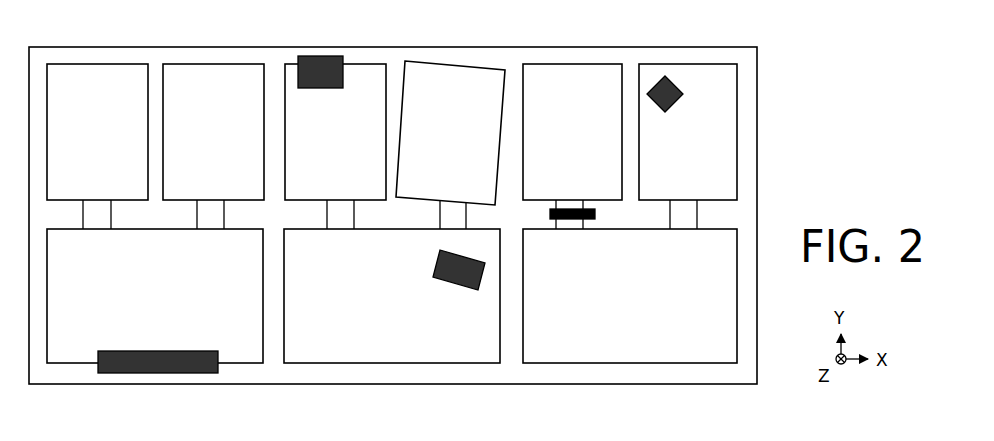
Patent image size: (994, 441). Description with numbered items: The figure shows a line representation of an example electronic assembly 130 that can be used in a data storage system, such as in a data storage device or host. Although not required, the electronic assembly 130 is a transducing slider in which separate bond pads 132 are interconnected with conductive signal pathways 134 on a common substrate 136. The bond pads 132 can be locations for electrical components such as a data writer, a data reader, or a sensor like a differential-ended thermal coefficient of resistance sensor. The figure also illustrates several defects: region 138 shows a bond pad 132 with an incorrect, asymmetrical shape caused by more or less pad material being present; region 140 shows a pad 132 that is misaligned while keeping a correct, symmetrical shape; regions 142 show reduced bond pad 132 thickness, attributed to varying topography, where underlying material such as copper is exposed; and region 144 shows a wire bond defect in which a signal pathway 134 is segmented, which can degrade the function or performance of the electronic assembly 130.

The electronic assembly 130 is at (790, 43).
The bond pad 132 is at (118, 141).
The conductive signal pathway 134 is at (717, 217).
The common substrate 136 is at (757, 108).
The region 138 is at (318, 53).
The region 140 is at (476, 60).
The region 142 is at (679, 81).
The region 144 is at (573, 229).